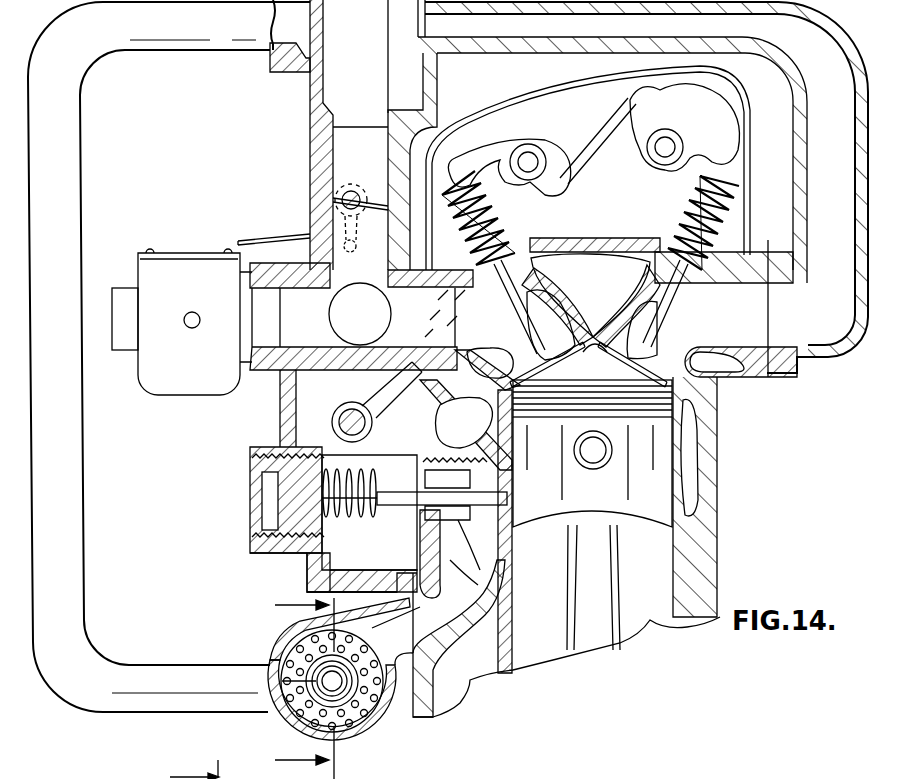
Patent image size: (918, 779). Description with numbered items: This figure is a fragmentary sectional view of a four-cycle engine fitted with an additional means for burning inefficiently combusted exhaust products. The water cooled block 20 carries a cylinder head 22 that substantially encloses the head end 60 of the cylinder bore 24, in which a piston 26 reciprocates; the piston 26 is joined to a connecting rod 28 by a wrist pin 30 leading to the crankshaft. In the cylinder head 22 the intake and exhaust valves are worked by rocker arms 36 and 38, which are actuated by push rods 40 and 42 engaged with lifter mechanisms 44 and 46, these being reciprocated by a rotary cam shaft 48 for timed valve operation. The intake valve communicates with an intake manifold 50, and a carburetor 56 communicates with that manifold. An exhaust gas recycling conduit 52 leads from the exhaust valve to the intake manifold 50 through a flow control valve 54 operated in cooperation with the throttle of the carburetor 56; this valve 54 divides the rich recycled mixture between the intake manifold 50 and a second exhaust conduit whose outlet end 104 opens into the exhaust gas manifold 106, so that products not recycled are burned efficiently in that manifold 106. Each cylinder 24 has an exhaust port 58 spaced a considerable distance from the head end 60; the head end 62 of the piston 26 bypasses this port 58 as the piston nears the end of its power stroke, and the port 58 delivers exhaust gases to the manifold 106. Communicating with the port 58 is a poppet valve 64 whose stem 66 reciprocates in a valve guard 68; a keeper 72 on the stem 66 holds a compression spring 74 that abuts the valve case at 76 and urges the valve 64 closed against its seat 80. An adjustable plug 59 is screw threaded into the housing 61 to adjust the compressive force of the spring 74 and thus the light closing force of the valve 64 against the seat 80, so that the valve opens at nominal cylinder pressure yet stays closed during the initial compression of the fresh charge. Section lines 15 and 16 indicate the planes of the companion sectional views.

The block 20 is at (709, 438).
The cylinder head 22 is at (760, 380).
The cylinder bore 24 is at (690, 554).
The piston 26 is at (667, 487).
The connecting rod 28 is at (616, 571).
The piston pin 30 is at (587, 468).
The rocker arm 36 is at (558, 147).
The rocker arm 38 is at (700, 124).
The push rod 40 is at (553, 210).
The push rod 42 is at (597, 150).
The lifter mechanism 44 is at (424, 352).
The lifter mechanism 46 is at (392, 392).
The cam shaft 48 is at (335, 398).
The intake manifold 50 is at (333, 323).
The exhaust gas recycling conduit 52 is at (832, 211).
The flow control valve 54 is at (350, 192).
The carburetor 56 is at (212, 367).
The exhaust port 58 is at (420, 636).
The adjustable plug 59 is at (292, 548).
The head end 60 is at (557, 363).
The housing 61 is at (300, 578).
The head end of piston 62 is at (637, 365).
The poppet valve 64 is at (490, 567).
The stem 66 is at (458, 522).
The valve guard 68 is at (450, 462).
The keeper 72 is at (392, 510).
The compression spring 74 is at (346, 523).
The abutment 76 is at (280, 447).
The seat 80 is at (576, 637).
The outlet end 104 is at (272, 676).
The exhaust gas manifold 106 is at (375, 735).
The section line 15 is at (287, 686).
The section line 16 is at (194, 766).